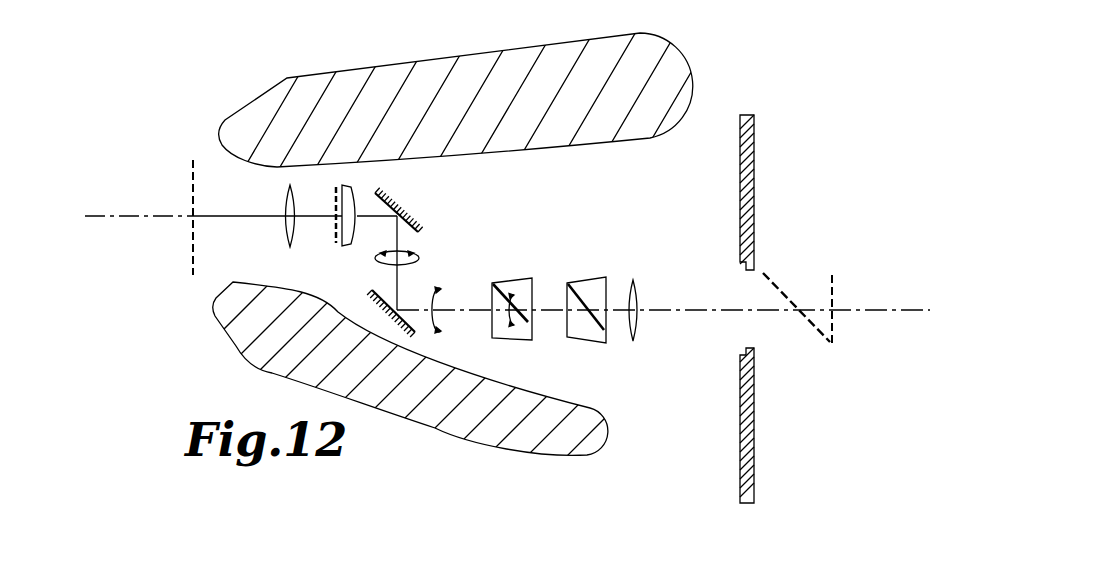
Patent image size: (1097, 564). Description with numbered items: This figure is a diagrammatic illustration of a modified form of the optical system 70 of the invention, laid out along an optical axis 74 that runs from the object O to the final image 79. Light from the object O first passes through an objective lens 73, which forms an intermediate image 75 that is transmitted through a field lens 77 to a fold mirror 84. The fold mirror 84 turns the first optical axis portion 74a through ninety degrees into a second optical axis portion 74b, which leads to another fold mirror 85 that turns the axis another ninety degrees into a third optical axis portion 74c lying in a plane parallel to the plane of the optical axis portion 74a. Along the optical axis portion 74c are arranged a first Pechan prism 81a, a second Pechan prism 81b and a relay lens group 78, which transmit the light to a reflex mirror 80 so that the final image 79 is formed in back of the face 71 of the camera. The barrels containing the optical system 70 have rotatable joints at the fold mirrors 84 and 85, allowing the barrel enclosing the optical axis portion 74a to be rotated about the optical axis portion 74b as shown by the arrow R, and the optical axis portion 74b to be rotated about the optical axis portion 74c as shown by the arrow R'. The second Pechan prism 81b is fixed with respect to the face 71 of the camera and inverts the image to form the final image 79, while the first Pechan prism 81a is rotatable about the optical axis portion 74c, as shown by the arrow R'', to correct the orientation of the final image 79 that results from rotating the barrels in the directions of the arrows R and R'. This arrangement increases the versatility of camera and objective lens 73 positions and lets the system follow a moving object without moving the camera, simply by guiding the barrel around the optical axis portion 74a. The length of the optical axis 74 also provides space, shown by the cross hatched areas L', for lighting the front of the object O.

The optical system 70 is at (536, 212).
The face of the camera 71 is at (740, 455).
The objective lens 73 is at (285, 233).
The optical axis 74 is at (180, 219).
The optical axis portion 74a is at (242, 215).
The optical axis portion 74b is at (396, 283).
The optical axis portion 74c is at (740, 309).
The intermediate image 75 is at (332, 232).
The field lens 77 is at (352, 195).
The relay lens group 78 is at (634, 332).
The final image 79 is at (832, 290).
The reflex mirror 80 is at (812, 326).
The first Pechan prism 81a is at (517, 345).
The second Pechan prism 81b is at (585, 343).
The fold mirror 84 is at (418, 234).
The fold mirror 85 is at (375, 290).
The object O is at (193, 162).
The cross hatched areas L' is at (428, 250).
The arrow R is at (430, 239).
The arrow R' is at (448, 321).
The arrow R'' is at (535, 270).